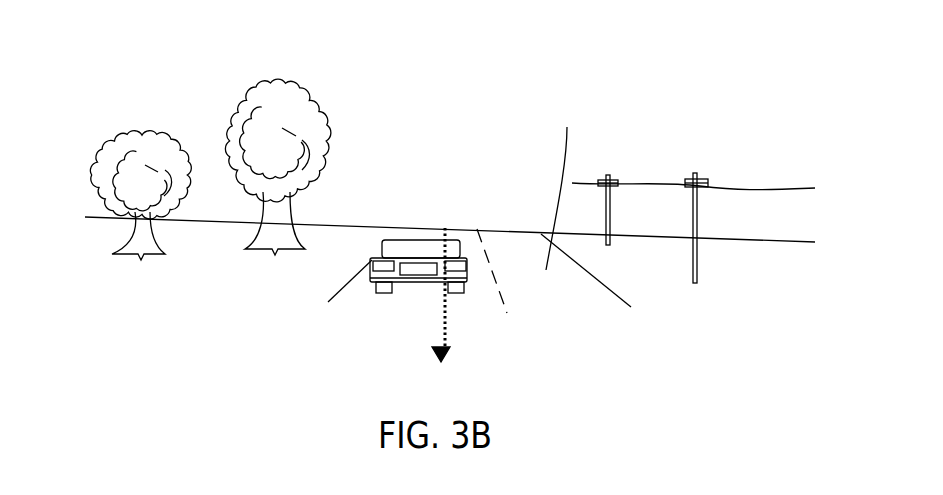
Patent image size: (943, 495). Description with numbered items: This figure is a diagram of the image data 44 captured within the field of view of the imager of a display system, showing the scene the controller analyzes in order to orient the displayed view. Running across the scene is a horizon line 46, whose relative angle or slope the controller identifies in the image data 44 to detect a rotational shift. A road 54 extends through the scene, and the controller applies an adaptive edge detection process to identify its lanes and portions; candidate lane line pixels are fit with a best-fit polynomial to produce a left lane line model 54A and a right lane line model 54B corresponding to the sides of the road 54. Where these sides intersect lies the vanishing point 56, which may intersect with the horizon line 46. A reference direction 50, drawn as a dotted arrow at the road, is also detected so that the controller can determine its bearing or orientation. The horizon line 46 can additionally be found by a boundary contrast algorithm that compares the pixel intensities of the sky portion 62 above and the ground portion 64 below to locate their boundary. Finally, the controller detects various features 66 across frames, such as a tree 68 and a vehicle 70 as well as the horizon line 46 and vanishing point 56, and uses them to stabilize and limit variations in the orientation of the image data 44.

The image data 44 is at (543, 85).
The horizon line 46 is at (732, 240).
The reference direction 50 is at (444, 342).
The road 54 is at (573, 184).
The left lane line model 54A is at (631, 306).
The right lane line model 54B is at (346, 287).
The vanishing point 56 is at (391, 224).
The sky portion 62 is at (693, 188).
The ground portion 64 is at (135, 293).
The features 66 is at (697, 172).
The tree 68 is at (240, 120).
The vehicle 70 is at (438, 224).